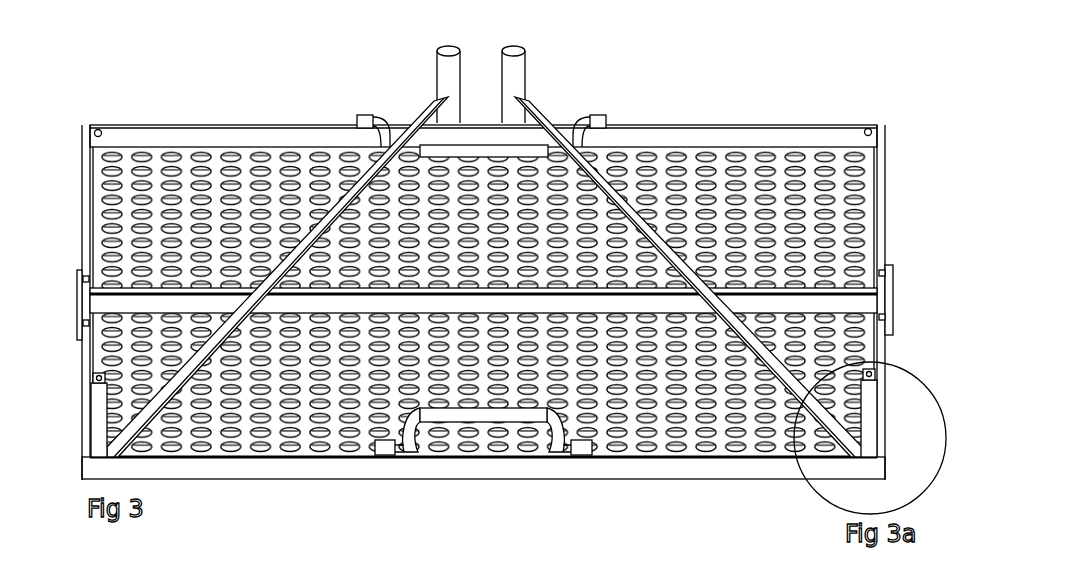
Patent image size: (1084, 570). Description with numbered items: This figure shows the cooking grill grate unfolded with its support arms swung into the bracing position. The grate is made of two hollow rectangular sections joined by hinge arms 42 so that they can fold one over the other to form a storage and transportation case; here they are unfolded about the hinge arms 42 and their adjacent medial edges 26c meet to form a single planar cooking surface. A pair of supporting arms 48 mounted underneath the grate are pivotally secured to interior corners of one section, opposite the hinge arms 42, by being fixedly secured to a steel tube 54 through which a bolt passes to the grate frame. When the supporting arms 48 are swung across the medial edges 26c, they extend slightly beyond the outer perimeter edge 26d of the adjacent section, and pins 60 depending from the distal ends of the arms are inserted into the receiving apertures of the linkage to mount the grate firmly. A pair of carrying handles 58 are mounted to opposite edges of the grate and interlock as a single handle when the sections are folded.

The medial edges 26c is at (597, 302).
The outer perimeter edge 26d is at (747, 133).
The hinge arms 42 is at (77, 283).
The supporting arms 48 is at (357, 181).
The steel tube 54 is at (95, 406).
The carrying handles 58 is at (368, 113).
The pins 60 is at (447, 65).